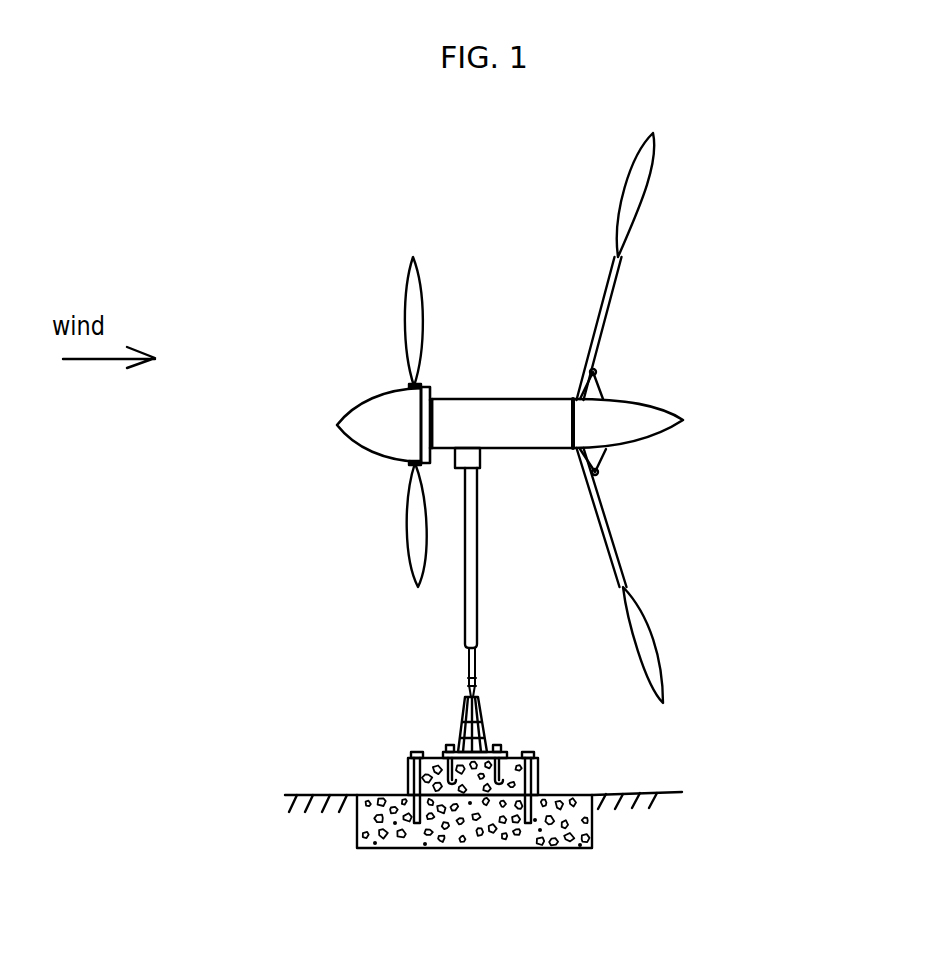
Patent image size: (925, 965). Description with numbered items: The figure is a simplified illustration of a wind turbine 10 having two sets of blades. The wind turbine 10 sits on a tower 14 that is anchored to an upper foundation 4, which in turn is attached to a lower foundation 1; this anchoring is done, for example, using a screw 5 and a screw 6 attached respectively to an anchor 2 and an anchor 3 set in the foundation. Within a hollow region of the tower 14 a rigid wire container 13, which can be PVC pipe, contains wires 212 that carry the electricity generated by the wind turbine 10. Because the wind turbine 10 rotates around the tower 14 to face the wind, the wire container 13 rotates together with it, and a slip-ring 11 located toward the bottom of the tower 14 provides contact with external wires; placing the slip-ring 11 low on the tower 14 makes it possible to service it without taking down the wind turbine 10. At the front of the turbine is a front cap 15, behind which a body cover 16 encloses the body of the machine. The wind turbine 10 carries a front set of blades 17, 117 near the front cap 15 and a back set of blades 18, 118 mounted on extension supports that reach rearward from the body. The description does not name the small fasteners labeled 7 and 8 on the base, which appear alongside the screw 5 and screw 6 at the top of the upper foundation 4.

The lower foundation 1 is at (653, 791).
The anchor 2 is at (408, 827).
The anchor 3 is at (525, 823).
The upper foundation 4 is at (407, 778).
The screw 5 is at (413, 753).
The screw 6 is at (538, 770).
The fixing bolt 7 is at (447, 747).
The fixing bolt 8 is at (503, 747).
The wind turbine 10 is at (519, 415).
The slip-ring 11 is at (490, 727).
The rigid wire container 13 is at (475, 658).
The tower 14 is at (458, 621).
The front cap 15 is at (353, 440).
The body cover 16 is at (458, 398).
The blade 17 is at (412, 562).
The blade 18 is at (660, 648).
The blade 117 is at (408, 278).
The blade 118 is at (655, 181).
The wires 212 is at (467, 681).